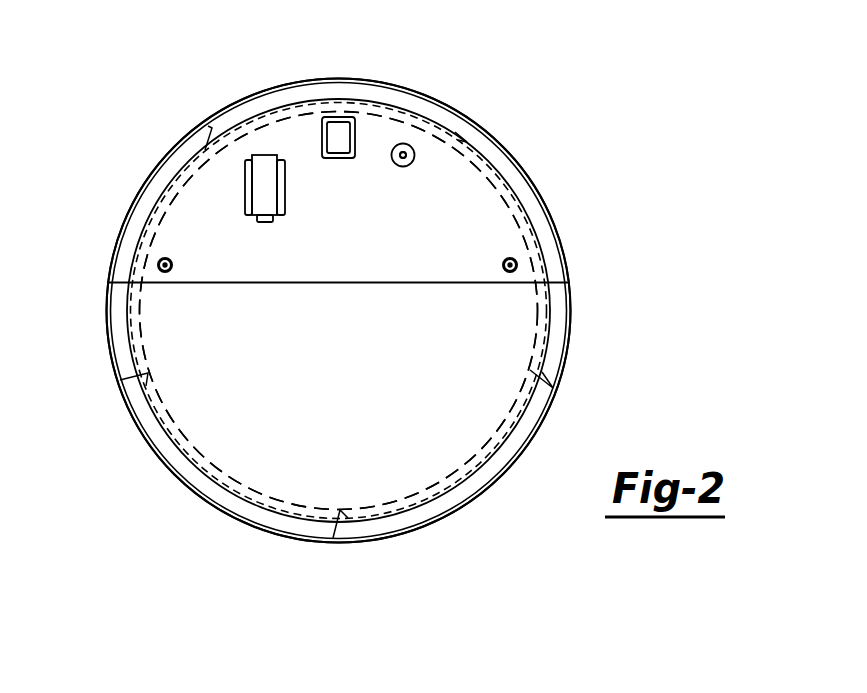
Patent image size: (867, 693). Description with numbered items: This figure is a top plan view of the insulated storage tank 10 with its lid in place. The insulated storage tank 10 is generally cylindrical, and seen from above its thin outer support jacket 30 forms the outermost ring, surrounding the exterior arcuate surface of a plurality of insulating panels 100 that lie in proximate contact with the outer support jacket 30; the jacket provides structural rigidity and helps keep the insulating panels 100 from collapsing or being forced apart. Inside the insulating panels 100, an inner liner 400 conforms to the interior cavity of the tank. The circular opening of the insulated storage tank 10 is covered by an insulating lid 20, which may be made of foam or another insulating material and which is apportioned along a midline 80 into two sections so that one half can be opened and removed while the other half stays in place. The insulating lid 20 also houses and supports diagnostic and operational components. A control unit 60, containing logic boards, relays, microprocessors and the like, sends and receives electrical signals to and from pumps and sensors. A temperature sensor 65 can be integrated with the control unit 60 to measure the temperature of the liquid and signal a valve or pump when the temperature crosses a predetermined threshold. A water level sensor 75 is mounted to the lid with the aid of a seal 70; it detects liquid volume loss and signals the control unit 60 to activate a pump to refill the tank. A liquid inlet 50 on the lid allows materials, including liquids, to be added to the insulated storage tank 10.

The insulated storage tank 10 is at (527, 60).
The insulating lid 20 is at (505, 350).
The outer support jacket 30 is at (150, 449).
The liquid inlet 50 is at (158, 260).
The control unit 60 is at (264, 162).
The temperature sensor 65 is at (353, 132).
The seal 70 is at (409, 150).
The water level sensor 75 is at (403, 167).
The midline 80 is at (413, 284).
The insulating panels 100 is at (518, 185).
The inner liner 400 is at (434, 499).